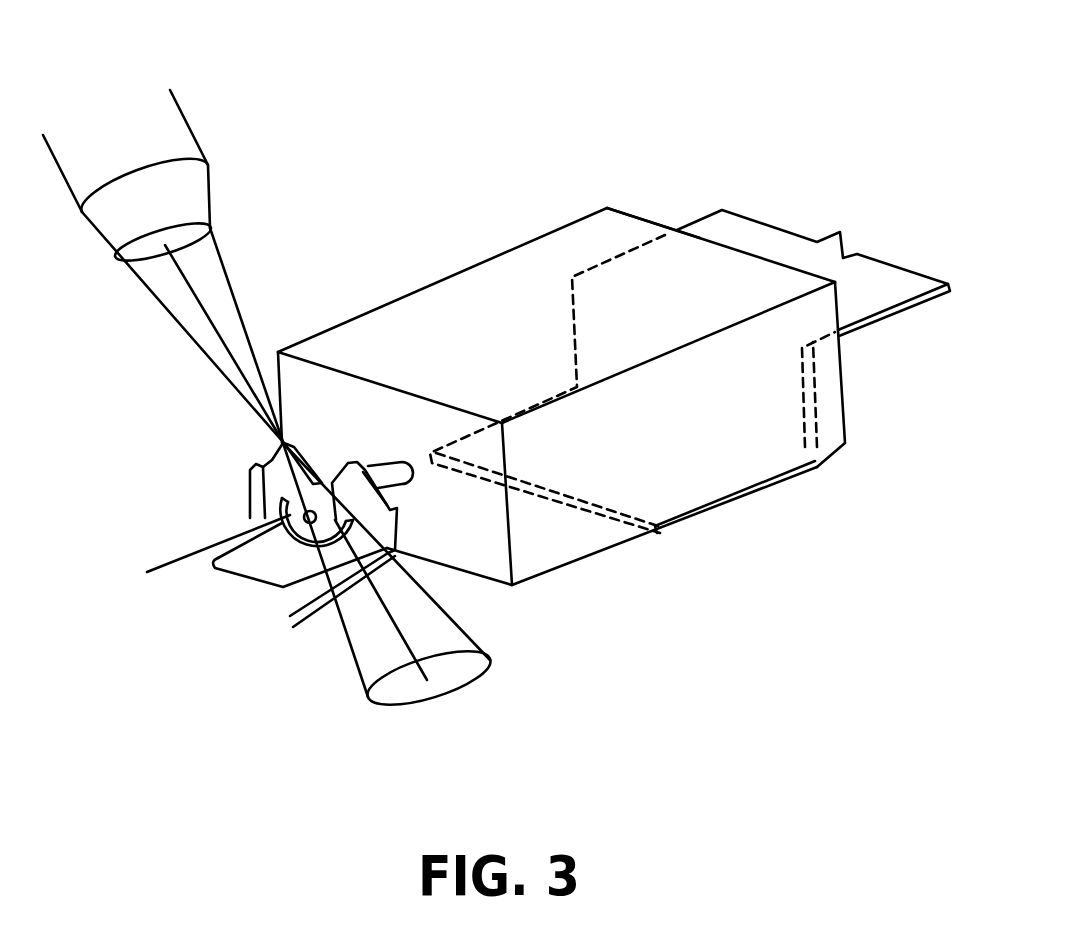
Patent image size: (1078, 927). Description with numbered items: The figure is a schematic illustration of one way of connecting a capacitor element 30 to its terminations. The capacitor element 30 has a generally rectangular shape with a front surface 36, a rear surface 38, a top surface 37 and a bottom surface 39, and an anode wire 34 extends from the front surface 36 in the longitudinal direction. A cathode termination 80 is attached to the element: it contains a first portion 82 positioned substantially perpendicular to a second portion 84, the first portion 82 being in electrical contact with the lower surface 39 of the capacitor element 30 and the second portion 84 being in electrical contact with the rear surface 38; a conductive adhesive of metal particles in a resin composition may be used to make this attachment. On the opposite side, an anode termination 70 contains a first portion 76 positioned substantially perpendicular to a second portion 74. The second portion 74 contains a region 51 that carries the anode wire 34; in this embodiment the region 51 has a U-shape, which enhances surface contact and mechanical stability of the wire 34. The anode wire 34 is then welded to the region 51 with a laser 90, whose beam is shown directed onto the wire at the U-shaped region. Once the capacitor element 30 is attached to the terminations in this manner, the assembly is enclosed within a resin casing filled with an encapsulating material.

The capacitor element 30 is at (561, 370).
The anode wire 34 is at (387, 473).
The front surface 36 is at (472, 537).
The top surface 37 is at (407, 328).
The rear surface 38 is at (643, 220).
The bottom surface 39 is at (585, 558).
The region 51 is at (280, 520).
The anode termination 70 is at (217, 605).
The second portion 74 is at (262, 482).
The first portion 76 is at (308, 603).
The cathode termination 80 is at (792, 233).
The first portion 82 is at (748, 497).
The second portion 84 is at (810, 397).
The laser 90 is at (128, 108).